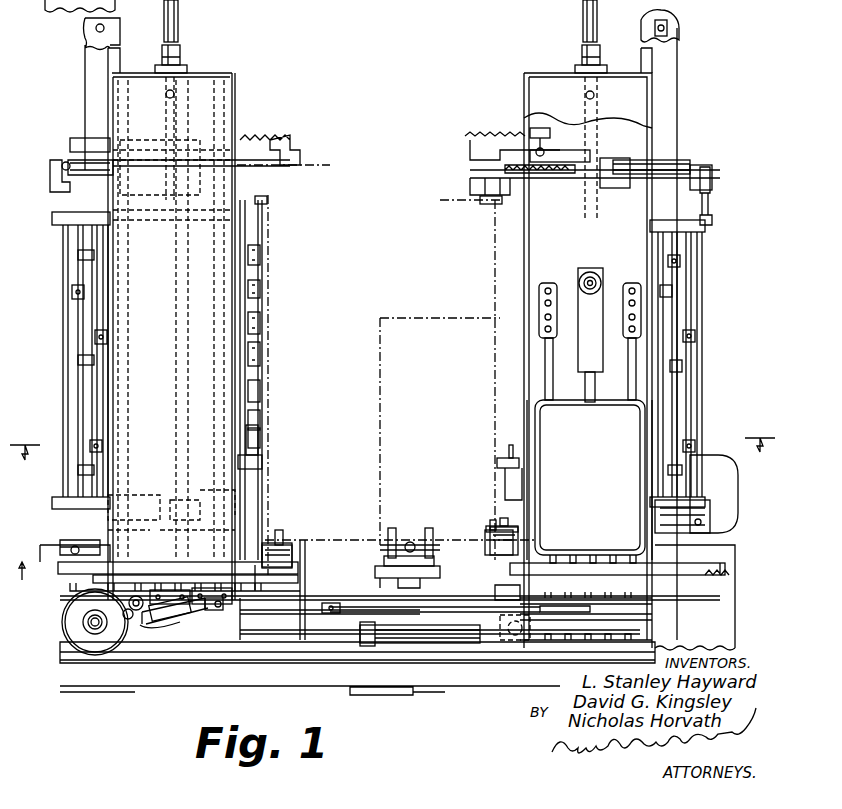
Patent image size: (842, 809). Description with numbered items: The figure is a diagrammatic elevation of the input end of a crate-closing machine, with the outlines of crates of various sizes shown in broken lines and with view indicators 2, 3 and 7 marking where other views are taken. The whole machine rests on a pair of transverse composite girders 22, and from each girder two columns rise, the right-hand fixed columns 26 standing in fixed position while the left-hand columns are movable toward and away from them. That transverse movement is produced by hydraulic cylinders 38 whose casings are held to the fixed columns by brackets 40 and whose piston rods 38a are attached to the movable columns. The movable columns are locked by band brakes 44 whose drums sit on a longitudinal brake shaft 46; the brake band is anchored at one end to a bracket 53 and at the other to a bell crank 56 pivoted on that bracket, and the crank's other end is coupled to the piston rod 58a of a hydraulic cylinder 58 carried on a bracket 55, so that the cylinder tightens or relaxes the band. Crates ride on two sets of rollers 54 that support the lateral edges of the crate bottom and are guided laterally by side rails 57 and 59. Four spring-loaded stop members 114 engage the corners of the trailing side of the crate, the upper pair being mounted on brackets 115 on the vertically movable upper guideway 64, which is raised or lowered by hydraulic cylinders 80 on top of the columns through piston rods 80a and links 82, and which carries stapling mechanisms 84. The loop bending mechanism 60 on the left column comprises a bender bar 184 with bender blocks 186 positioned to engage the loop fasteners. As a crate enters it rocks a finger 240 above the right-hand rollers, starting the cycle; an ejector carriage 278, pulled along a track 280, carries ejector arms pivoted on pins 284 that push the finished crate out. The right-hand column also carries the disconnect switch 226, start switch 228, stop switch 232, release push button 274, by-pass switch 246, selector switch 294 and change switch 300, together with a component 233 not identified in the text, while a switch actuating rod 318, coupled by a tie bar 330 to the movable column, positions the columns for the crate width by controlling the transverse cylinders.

The section line 2- 2 is at (392, 448).
The section line 3- 3 is at (139, 581).
The section line 7- 7 is at (200, 47).
The composite girders 22 is at (62, 672).
The fixed columns 26 is at (522, 95).
The hydraulic cylinders 38 is at (395, 640).
The piston rods 38a is at (292, 633).
The brackets 40 is at (535, 630).
The brakes 44 is at (70, 612).
The brake shaft 46 is at (88, 624).
The bracket 53 is at (170, 593).
The rollers 54 is at (276, 542).
The bracket 55 is at (209, 593).
The bell crank 56 is at (165, 610).
The side rail 57 is at (262, 467).
The hydraulic cylinder 58 is at (200, 612).
The piston rod 58a is at (168, 632).
The side rail 59 is at (498, 460).
The loop bending mechanism 60 is at (272, 330).
The upper guideway 64 is at (712, 207).
The hydraulic cylinders 80 is at (179, 15).
The piston rods 80a is at (168, 91).
The links 82 is at (590, 146).
The stapling mechanisms 84 is at (58, 158).
The stop members 114 is at (268, 203).
The brackets 115 is at (500, 190).
The bender bar 184 is at (252, 238).
The bender blocks 186 is at (258, 296).
The disconnect switch 226 is at (635, 303).
The start switch 228 is at (635, 317).
The stop switch 232 is at (635, 329).
The motor 233 is at (738, 474).
The finger 240 is at (487, 525).
The by-pass switch 246 is at (545, 317).
The push button switch 274 is at (545, 303).
The ejector carriage 278 is at (392, 566).
The track 280 is at (395, 578).
The pins 284 is at (376, 552).
The selector switch 294 is at (590, 275).
The change switch 300 is at (545, 330).
The switch actuating rod 318 is at (398, 607).
The tie bar 330 is at (290, 610).